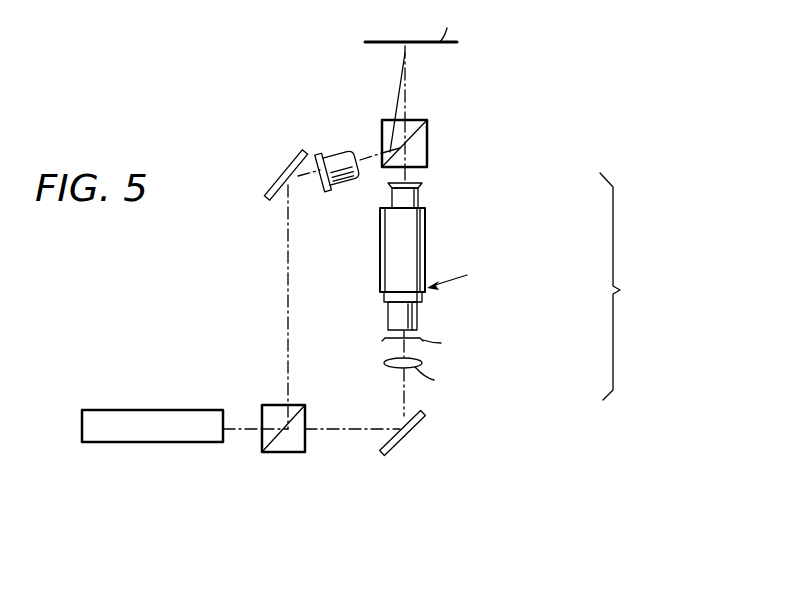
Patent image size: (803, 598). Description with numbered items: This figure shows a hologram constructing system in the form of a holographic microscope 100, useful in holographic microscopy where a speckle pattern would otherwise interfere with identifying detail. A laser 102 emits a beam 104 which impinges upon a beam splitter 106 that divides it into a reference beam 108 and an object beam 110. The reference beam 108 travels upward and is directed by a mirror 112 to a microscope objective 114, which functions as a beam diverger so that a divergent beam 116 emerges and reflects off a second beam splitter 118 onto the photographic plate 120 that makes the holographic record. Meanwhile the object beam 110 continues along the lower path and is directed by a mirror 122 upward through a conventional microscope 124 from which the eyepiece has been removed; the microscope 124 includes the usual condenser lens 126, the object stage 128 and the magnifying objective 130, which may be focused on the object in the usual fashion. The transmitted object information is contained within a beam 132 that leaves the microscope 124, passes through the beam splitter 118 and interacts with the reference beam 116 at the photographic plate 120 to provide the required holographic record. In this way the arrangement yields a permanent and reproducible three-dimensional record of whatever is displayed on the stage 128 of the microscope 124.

The holographic microscope 100 is at (465, 427).
The laser 102 is at (146, 442).
The beam 104 is at (235, 432).
The beam splitter 106 is at (284, 452).
The reference beam 108 is at (288, 256).
The object beam 110 is at (345, 431).
The mirror 112 is at (279, 179).
The microscope objective 114 is at (340, 148).
The divergent beam 116 is at (386, 152).
The beam splitter 118 is at (427, 145).
The photographic plate 120 is at (373, 42).
The mirror 122 is at (392, 446).
The microscope 124 is at (544, 286).
The condenser lens 126 is at (390, 367).
The object stage 128 is at (382, 339).
The magnifying objective 130 is at (388, 318).
The beam 132 is at (403, 173).